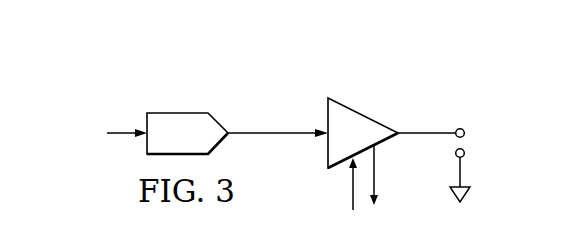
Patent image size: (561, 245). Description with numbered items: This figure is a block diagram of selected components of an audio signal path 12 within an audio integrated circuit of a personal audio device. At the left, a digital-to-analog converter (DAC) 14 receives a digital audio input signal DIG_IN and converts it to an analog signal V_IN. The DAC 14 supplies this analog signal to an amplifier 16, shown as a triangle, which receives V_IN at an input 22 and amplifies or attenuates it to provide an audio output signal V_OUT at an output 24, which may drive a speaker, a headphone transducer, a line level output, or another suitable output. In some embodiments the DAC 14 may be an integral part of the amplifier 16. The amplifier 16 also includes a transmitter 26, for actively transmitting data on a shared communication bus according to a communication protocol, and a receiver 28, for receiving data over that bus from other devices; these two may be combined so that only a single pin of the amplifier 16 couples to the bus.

The audio signal path 12 is at (227, 62).
The digital-to-analog converter (DAC) 14 is at (178, 113).
The amplifier 16 is at (366, 112).
The input 22 is at (323, 124).
The output 24 is at (418, 131).
The transmitter 26 is at (378, 148).
The receiver 28 is at (345, 173).